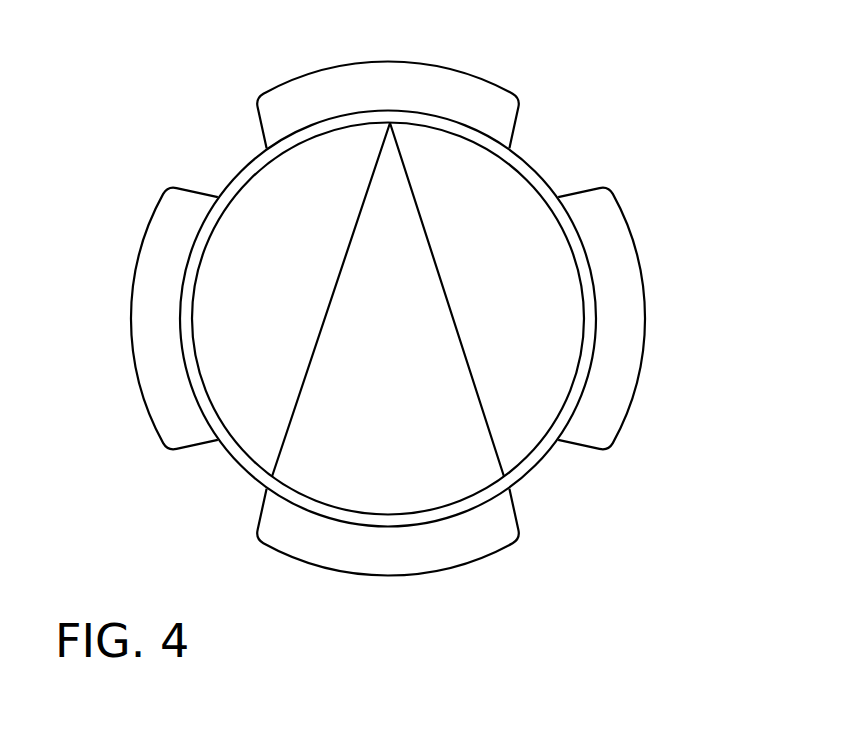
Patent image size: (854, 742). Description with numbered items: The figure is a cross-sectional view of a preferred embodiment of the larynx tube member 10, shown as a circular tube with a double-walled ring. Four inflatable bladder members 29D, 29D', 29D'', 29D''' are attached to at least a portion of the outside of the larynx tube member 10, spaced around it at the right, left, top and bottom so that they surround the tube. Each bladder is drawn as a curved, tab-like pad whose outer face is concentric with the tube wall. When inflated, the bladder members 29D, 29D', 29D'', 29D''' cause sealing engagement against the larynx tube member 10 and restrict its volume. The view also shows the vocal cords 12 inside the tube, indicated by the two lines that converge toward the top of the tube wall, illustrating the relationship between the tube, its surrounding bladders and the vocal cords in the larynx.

The larynx tube member 10 is at (538, 462).
The vocal cords 12 is at (272, 208).
The inflatable bladder member 29D is at (665, 319).
The inflatable bladder member 29D' is at (125, 319).
The inflatable bladder member 29D'' is at (388, 77).
The inflatable bladder member 29D''' is at (394, 555).